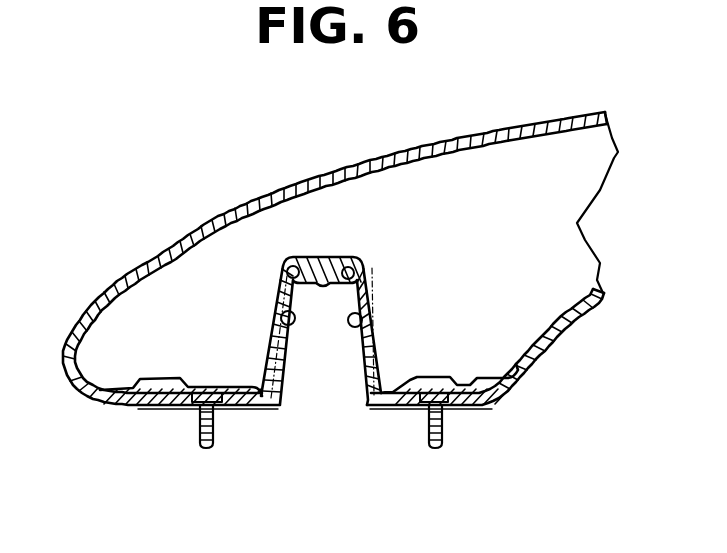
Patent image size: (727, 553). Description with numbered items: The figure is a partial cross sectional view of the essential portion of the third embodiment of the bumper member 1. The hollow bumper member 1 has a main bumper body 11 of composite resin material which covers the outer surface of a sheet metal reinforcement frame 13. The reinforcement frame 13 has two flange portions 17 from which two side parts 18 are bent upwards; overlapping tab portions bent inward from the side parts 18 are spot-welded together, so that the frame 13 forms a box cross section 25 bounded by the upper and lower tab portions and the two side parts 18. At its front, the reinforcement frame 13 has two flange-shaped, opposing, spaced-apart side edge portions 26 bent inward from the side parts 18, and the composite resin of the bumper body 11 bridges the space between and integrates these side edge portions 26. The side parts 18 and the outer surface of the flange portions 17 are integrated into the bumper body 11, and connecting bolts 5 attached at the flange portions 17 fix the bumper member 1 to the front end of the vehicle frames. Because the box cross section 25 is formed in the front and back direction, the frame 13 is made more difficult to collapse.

The bumper member 1 is at (214, 218).
The bumper body 11 is at (345, 168).
The reinforcement frame 13 is at (360, 384).
The box cross section 25 is at (305, 355).
The side edge portions 26 is at (297, 256).
The side parts 18 is at (281, 315).
The flange portions 17 is at (259, 407).
The connecting bolt 5 is at (197, 437).